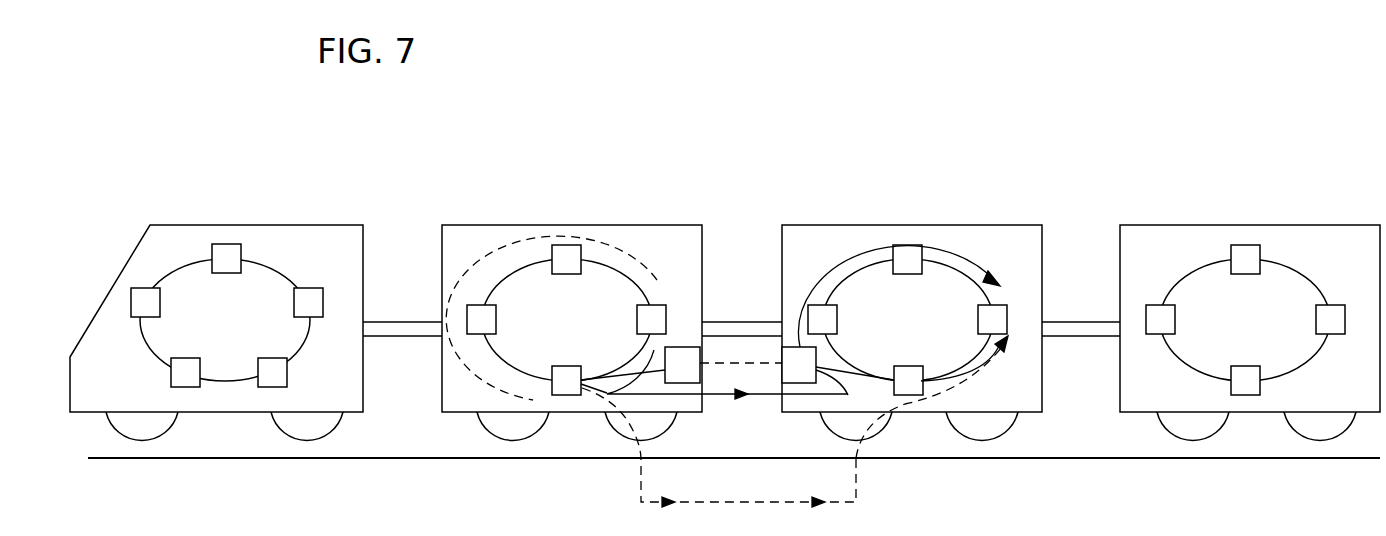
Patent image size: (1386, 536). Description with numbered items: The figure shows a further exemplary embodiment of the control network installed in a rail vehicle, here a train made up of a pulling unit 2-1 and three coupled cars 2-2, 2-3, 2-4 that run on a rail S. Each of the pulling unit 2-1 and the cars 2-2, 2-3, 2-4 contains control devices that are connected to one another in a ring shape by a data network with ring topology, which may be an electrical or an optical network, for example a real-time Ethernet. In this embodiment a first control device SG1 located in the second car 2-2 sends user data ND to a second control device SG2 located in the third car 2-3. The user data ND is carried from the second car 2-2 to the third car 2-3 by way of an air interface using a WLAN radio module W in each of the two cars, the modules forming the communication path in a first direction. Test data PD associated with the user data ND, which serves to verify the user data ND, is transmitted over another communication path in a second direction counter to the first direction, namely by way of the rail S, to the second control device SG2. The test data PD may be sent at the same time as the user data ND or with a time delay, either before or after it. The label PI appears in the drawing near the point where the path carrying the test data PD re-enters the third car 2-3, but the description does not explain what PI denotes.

The pulling unit 2-1 is at (248, 337).
The second car 2-2 is at (572, 306).
The third car 2-3 is at (912, 306).
The fourth car 2-4 is at (1263, 337).
The first control device SG1 is at (655, 320).
The second control device SG2 is at (993, 320).
The WLAN radio module W is at (737, 371).
The user data ND is at (803, 312).
The test data PD is at (719, 462).
The position information PI is at (943, 397).
The rail S is at (1353, 458).